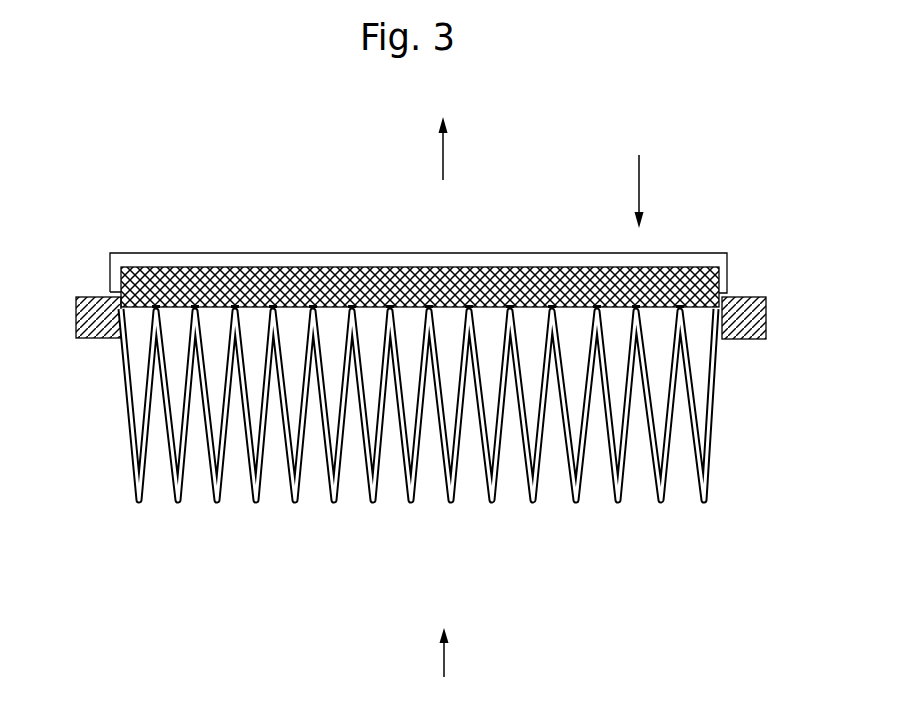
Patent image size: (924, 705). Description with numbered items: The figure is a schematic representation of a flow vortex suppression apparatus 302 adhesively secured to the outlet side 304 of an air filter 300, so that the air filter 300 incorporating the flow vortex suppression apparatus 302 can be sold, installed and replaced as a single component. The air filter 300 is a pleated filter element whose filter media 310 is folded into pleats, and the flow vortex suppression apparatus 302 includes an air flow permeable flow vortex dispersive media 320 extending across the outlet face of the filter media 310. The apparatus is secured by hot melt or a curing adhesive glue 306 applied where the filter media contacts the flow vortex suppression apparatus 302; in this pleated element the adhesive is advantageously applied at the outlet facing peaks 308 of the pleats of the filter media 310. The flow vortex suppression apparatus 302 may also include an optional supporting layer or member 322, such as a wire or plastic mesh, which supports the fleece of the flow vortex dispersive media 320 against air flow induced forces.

The air filter 300 is at (445, 394).
The flow vortex suppression apparatus 302 is at (464, 229).
The outlet side 304 is at (638, 169).
The adhesive glue 306 is at (318, 303).
The outlet facing peaks 308 is at (425, 404).
The filter media 310 is at (697, 405).
The air flow permeable flow vortex dispersive media 320 is at (378, 303).
The supporting layer or member 322 is at (168, 253).